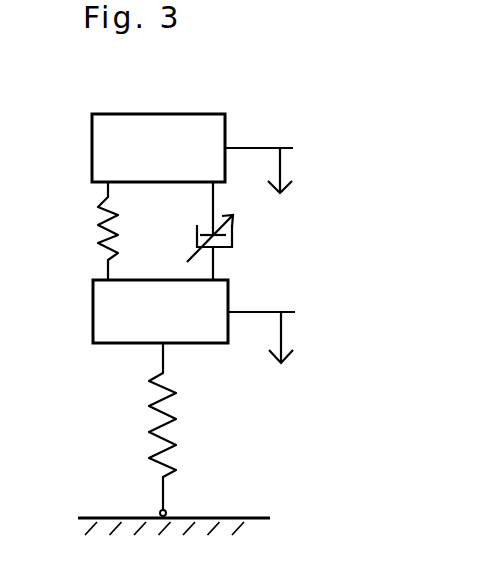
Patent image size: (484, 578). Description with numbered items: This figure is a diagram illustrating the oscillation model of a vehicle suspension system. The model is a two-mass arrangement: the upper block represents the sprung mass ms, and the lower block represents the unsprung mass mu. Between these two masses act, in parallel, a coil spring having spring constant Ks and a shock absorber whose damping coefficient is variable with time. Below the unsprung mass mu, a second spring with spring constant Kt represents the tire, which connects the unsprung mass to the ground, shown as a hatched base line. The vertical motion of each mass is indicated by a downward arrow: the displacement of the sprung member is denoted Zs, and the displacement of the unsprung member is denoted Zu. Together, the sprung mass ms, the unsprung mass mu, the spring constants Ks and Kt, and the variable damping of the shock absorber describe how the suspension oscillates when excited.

The sprung mass ms is at (158, 148).
The unsprung mass mu is at (160, 311).
The spring constant of coil spring Ks is at (87, 231).
The spring constant of tire Kt is at (141, 429).
The displacement of sprung member Zs is at (277, 175).
The displacement of unsprung member Zu is at (278, 352).